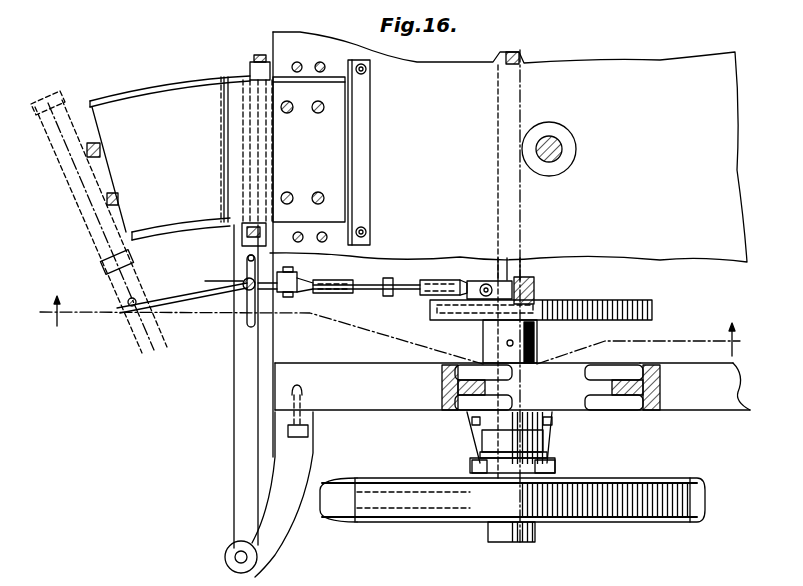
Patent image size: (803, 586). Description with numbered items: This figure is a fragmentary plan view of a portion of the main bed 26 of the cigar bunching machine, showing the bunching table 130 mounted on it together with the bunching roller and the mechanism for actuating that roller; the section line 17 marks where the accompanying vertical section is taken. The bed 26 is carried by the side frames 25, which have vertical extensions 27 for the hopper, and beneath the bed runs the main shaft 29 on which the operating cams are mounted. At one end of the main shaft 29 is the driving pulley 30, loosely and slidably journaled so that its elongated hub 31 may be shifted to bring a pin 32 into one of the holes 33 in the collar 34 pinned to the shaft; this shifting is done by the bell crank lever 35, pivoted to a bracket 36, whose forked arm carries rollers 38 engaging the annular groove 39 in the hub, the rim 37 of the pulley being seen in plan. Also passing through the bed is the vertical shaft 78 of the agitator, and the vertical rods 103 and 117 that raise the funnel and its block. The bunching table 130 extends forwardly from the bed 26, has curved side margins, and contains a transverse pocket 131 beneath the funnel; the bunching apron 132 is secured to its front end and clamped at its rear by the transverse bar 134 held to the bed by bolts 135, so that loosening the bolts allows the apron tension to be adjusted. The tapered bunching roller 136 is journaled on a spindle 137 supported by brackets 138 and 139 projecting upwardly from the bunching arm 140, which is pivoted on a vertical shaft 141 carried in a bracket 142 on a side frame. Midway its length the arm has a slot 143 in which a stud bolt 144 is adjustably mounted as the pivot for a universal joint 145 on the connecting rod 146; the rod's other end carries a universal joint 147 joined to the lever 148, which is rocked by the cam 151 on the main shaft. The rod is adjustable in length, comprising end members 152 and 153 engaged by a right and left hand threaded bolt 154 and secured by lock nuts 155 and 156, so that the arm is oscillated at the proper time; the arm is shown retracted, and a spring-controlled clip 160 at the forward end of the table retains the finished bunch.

The section line 17— 17 is at (390, 327).
The side frame 25 is at (724, 410).
The bed 26 is at (508, 244).
The vertical extension 27 is at (640, 410).
The main shaft 29 is at (521, 60).
The driving pulley 30 is at (635, 522).
The elongated hub 31 is at (548, 455).
The pin 32 is at (484, 442).
The holes 33 is at (470, 424).
The collar 34 is at (522, 420).
The bell crank lever 35 is at (558, 468).
The bracket 36 is at (550, 440).
The pulley rim 37 is at (705, 500).
The rollers 38 is at (470, 466).
The annular groove 39 is at (507, 468).
The vertical shaft 78 is at (562, 150).
The vertical rods 103 is at (323, 62).
The vertical rods 117 is at (297, 62).
The bunching table 130 is at (132, 95).
The transverse recess or pocket 131 is at (230, 77).
The bunching apron 132 is at (186, 198).
The transverse bar 134 is at (370, 185).
The bolts 135 is at (366, 69).
The tapered bunching roller 136 is at (243, 168).
The spindle 137 is at (243, 262).
The bracket 138 is at (242, 240).
The bracket 139 is at (255, 55).
The bunching arm 140 is at (252, 385).
The vertical shaft 141 is at (226, 563).
The bracket 142 is at (270, 530).
The slot 143 is at (247, 323).
The stud bolt 144 is at (245, 286).
The universal joint 145 is at (275, 320).
The connecting rod 146 is at (340, 300).
The universal joint 147 is at (534, 283).
The lever 148 is at (537, 300).
The cam 151 is at (653, 309).
The end member 152 is at (312, 300).
The end member 153 is at (490, 250).
The right and left hand threaded bolt 154 is at (390, 298).
The lock nut 155 is at (347, 273).
The lock nut 156 is at (440, 280).
The clip 160 is at (88, 155).